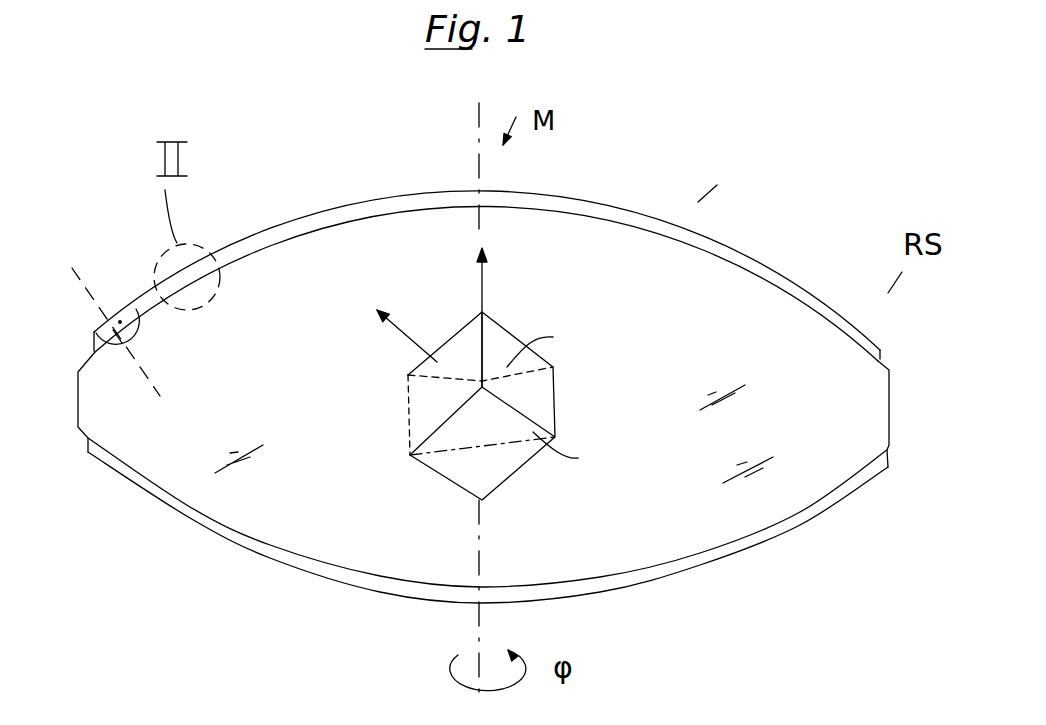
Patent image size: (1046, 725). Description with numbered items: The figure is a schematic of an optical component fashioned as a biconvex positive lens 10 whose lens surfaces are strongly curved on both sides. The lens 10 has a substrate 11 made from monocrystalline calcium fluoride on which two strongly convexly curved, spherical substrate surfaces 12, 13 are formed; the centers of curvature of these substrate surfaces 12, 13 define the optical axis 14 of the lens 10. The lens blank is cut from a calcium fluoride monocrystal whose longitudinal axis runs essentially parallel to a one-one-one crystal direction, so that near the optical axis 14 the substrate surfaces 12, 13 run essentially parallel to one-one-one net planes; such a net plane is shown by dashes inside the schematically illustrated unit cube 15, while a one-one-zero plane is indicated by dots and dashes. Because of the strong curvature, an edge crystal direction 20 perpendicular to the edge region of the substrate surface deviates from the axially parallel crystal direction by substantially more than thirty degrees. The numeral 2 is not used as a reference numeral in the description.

The optical surface of the lens 2 is at (742, 212).
The biconvex positive lens 10 is at (483, 414).
The substrate 11 is at (243, 510).
The substrate surface 12 is at (314, 558).
The substrate surface 13 is at (293, 240).
The optical axis 14 is at (478, 116).
The unit cube 15 is at (587, 390).
The edge crystal direction 20 is at (72, 268).